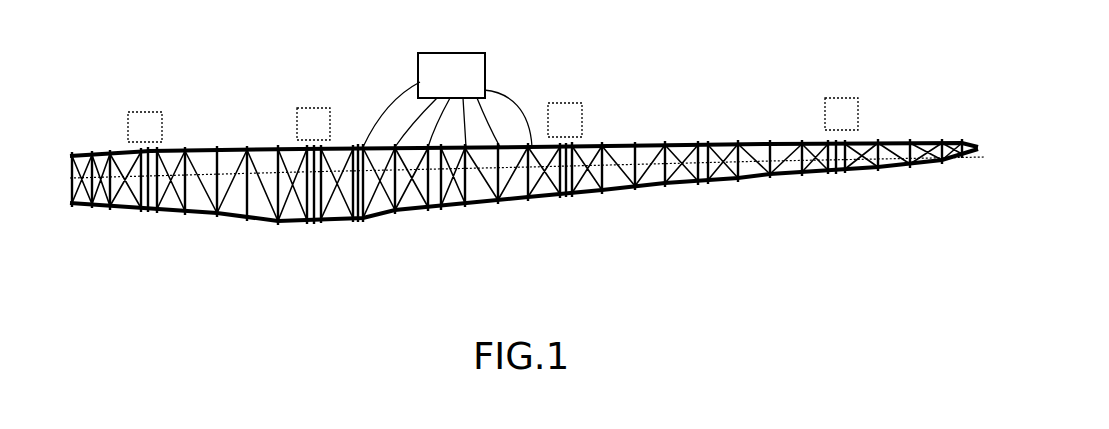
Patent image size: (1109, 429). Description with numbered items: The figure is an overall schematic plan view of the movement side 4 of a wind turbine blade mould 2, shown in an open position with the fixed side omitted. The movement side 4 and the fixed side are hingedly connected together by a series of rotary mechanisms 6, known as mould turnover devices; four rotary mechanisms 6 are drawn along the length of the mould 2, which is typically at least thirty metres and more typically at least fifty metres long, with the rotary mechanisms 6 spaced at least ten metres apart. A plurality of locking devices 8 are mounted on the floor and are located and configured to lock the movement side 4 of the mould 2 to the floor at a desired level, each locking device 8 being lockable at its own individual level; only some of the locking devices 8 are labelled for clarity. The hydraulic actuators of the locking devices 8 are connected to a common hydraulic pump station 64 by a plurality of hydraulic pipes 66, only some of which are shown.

The wind turbine blade mould 2 is at (752, 178).
The movement side 4 is at (613, 192).
The rotary mechanism 6 is at (163, 127).
The locking device 8 is at (215, 150).
The hydraulic pump station 64 is at (462, 53).
The hydraulic pipe 66 is at (502, 93).